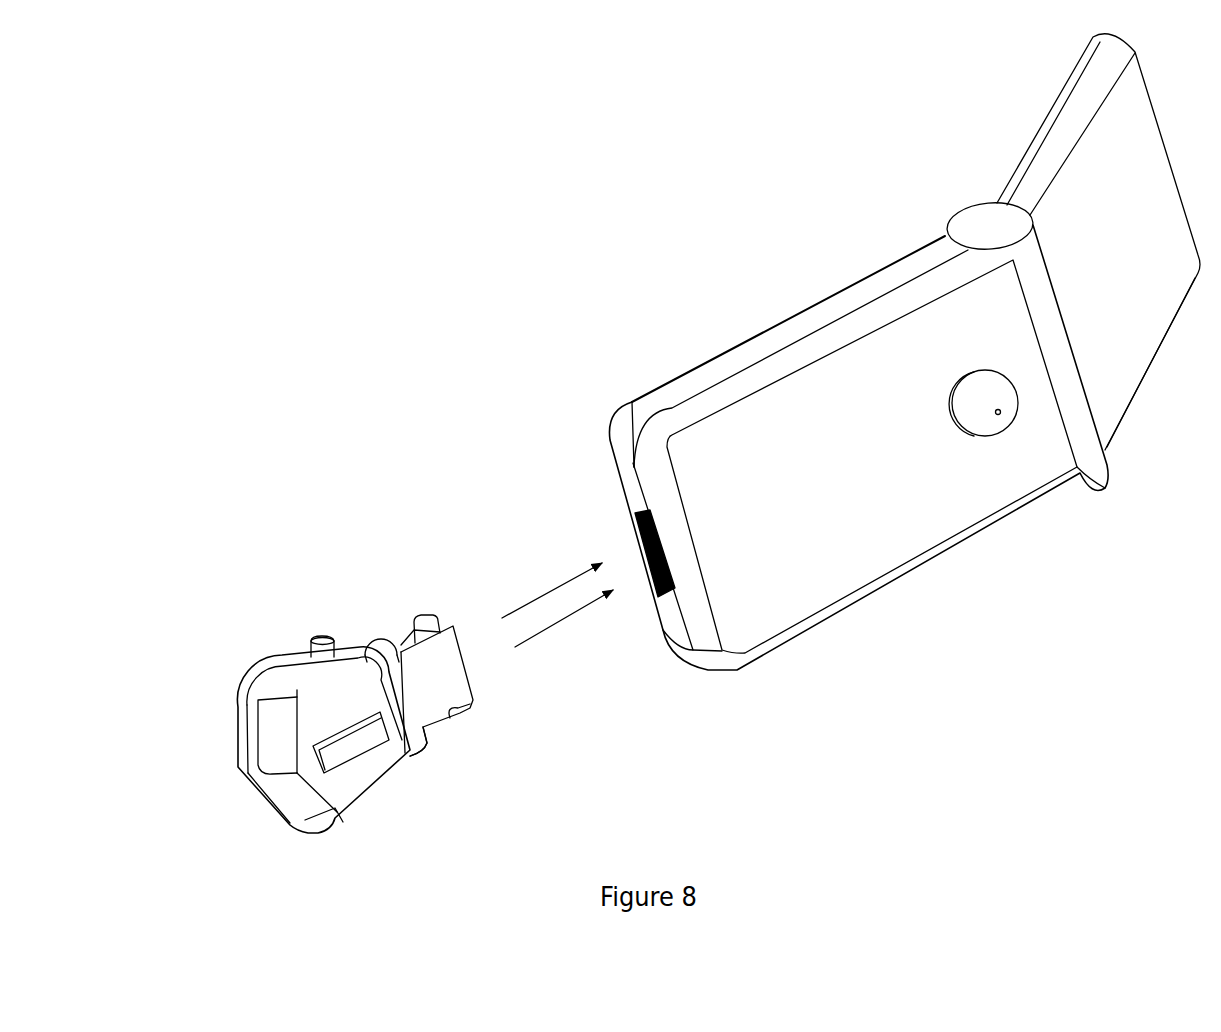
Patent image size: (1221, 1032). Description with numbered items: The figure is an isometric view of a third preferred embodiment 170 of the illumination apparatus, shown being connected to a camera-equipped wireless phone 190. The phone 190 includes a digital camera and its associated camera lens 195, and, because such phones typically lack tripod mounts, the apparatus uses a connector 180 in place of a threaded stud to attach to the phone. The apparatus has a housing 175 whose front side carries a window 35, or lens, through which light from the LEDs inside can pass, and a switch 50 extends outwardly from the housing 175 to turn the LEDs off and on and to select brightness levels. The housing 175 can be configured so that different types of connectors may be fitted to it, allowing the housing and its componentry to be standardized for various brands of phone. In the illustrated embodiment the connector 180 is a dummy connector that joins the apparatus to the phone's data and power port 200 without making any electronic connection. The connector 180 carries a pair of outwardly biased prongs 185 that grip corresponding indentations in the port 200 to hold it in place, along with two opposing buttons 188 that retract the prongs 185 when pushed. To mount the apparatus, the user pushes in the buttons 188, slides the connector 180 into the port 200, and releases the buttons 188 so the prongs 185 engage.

The window 35 is at (348, 743).
The switch 50 is at (320, 648).
The third preferred embodiment 170 is at (235, 655).
The housing 175 is at (277, 737).
The connector 180 is at (417, 667).
The outwardly biased prongs 185 is at (470, 705).
The buttons 188 is at (380, 638).
The wireless phone 190 is at (760, 270).
The camera lens 195 is at (983, 418).
The data and power port 200 is at (660, 603).